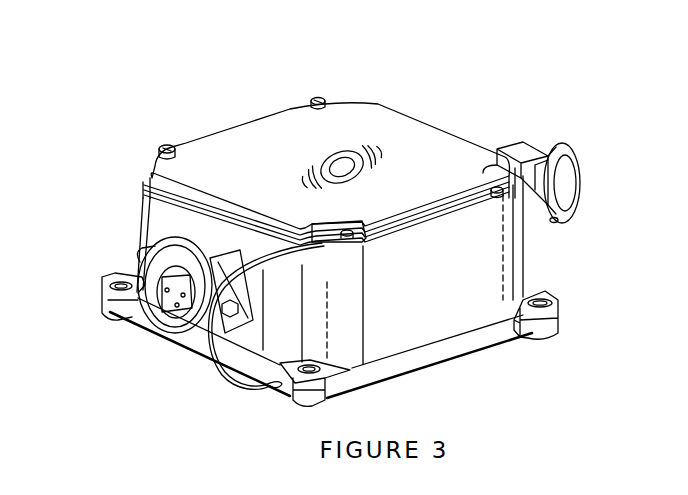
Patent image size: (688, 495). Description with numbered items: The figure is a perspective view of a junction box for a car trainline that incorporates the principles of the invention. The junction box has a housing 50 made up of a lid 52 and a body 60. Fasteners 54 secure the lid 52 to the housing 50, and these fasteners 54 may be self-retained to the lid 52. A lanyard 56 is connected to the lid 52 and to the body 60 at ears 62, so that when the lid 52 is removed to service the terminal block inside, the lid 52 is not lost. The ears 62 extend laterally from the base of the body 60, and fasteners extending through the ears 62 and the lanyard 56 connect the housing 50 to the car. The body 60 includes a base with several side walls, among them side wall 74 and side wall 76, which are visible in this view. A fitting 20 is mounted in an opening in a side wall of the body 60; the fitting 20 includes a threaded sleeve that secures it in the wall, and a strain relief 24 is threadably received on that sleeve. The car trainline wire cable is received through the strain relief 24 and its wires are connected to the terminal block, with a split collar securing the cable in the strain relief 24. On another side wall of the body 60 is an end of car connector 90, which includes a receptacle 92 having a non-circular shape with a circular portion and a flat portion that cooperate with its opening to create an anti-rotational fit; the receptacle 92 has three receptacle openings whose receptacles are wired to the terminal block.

The fitting 20 is at (568, 183).
The strain relief 24 is at (529, 133).
The housing 50 is at (317, 248).
The lid 52 is at (329, 144).
The fasteners 54 is at (297, 122).
The lanyard 56 is at (246, 356).
The body 60 is at (155, 275).
The ears 62 is at (578, 296).
The side wall 74 is at (436, 307).
The side wall 76 is at (188, 340).
The end of car connector 90 is at (134, 319).
The receptacle 92 is at (120, 316).